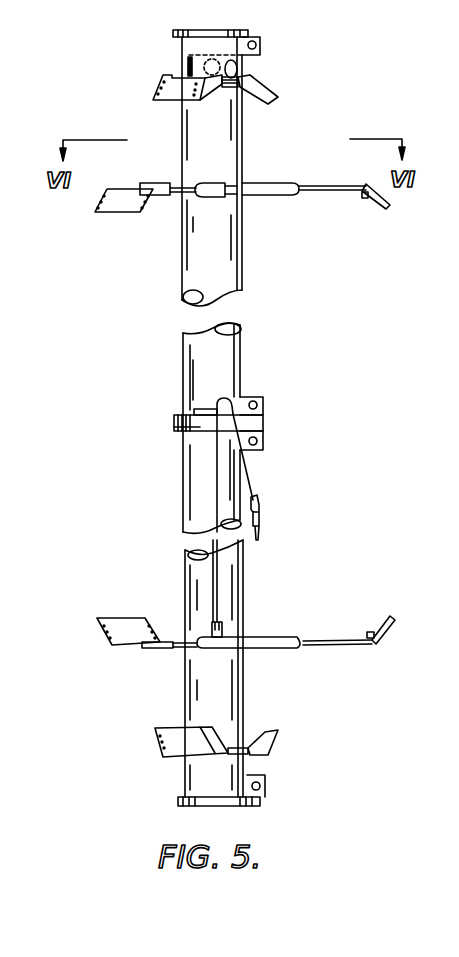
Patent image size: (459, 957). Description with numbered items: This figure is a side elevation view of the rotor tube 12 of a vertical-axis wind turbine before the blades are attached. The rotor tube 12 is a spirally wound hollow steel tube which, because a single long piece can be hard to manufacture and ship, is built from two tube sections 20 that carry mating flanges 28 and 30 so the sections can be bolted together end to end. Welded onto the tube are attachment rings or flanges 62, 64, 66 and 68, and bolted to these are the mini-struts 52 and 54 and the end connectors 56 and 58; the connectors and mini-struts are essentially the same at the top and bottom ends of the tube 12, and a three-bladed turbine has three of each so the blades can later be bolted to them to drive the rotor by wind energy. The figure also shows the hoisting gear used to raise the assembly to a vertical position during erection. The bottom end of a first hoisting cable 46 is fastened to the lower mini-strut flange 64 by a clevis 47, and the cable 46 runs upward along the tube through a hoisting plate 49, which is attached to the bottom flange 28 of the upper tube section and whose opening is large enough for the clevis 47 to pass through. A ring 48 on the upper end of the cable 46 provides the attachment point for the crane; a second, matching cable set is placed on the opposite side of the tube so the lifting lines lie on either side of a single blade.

The rotor tube 12 is at (172, 279).
The tube sections 20 is at (243, 346).
The mating flange 28 is at (175, 417).
The mating flange 30 is at (175, 431).
The hoisting cable 46 is at (252, 478).
The clevis 47 is at (224, 632).
The ring 48 is at (262, 523).
The hoisting plate 49 is at (215, 410).
The mini-strut 52 is at (107, 618).
The mini-strut 54 is at (113, 214).
The end connector 56 is at (158, 746).
The end connector 58 is at (155, 82).
The attachment flange 62 is at (238, 746).
The lower mini-strut flange 64 is at (180, 641).
The attachment flange 66 is at (190, 186).
The attachment flange 68 is at (238, 72).